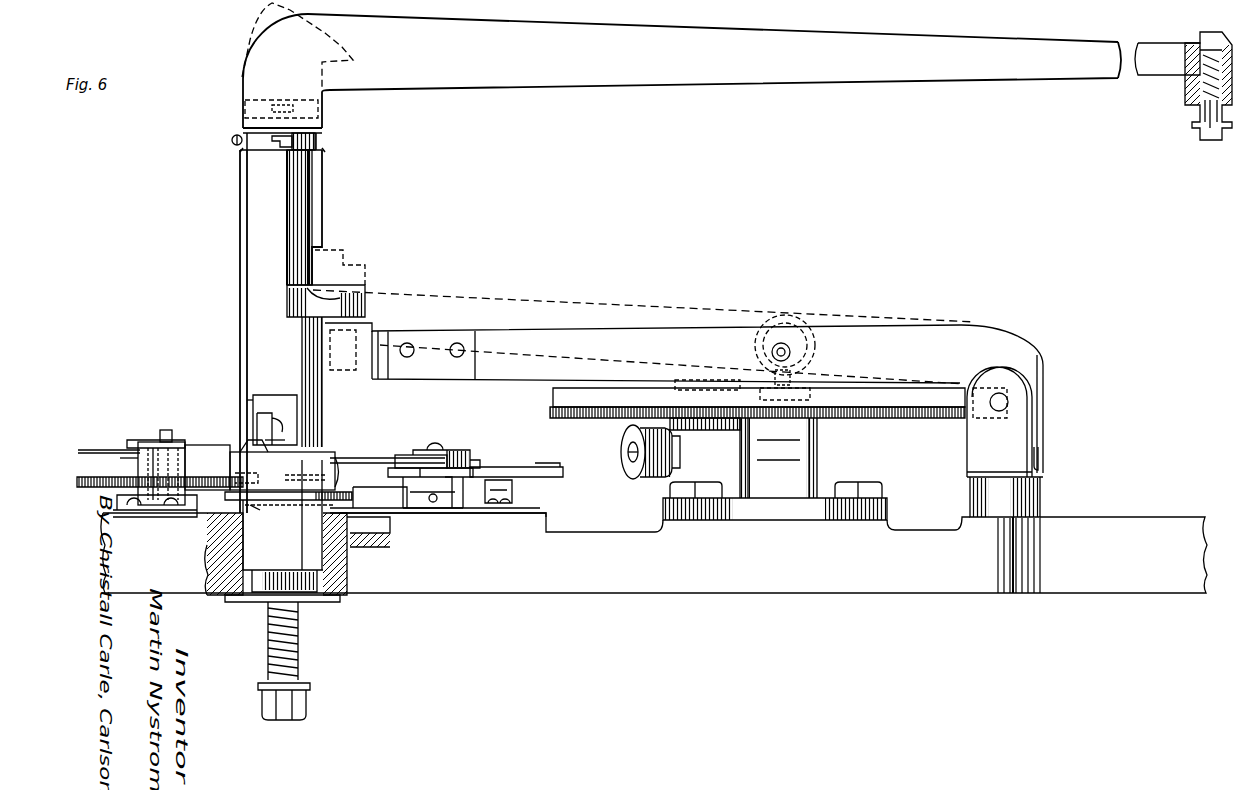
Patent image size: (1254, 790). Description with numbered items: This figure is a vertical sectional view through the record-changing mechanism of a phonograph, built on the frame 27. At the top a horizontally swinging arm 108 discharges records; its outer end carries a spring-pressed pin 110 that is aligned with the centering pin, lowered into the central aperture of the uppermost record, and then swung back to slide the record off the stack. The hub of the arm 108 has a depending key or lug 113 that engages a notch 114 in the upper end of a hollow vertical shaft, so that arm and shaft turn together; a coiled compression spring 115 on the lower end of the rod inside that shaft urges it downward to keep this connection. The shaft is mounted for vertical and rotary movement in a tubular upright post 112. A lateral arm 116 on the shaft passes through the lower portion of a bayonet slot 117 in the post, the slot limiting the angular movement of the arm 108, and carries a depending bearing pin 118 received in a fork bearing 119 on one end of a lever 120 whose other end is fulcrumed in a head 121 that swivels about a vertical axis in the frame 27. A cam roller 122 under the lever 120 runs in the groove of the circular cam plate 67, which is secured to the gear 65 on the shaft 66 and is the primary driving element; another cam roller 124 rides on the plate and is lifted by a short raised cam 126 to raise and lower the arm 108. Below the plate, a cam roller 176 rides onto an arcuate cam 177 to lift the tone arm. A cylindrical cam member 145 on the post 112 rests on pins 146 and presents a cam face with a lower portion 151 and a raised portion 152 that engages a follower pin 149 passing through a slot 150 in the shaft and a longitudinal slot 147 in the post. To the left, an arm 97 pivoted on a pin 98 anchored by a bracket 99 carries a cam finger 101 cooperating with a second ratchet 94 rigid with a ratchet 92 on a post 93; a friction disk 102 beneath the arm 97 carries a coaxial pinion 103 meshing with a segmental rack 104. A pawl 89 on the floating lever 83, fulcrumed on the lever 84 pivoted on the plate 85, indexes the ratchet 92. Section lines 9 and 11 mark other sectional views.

The horizontally swinging arm 108 is at (780, 72).
The spring-pressed pin 110 is at (1210, 140).
The depending key or lug 113 is at (290, 137).
The notch 114 is at (318, 146).
The tubular upright post 112 is at (240, 210).
The bayonet slot 117 is at (290, 225).
The section line 11- 11 is at (203, 268).
The lateral arm 116 is at (330, 300).
The depending bearing pin 118 is at (365, 315).
The fork bearing 119 is at (372, 326).
The lever 120 is at (575, 334).
The head 121 is at (1022, 440).
The gear 65 is at (955, 420).
The cam roller 124 is at (800, 330).
The short raised cam 126 is at (695, 385).
The cam roller 122 is at (830, 385).
The circular cam plate 67 is at (553, 397).
The shaft 66 is at (745, 462).
The arcuate cam 177 is at (710, 432).
The cam roller 176 is at (640, 478).
The frame 27 is at (1125, 517).
The coiled compression spring 115 is at (300, 655).
The segmental rack 104 is at (128, 456).
The friction disk 102 is at (110, 450).
The pin 98 is at (168, 430).
The bracket 99 is at (155, 448).
The arm 97 is at (140, 442).
The coaxial pinion 103 is at (205, 462).
The lower portion 151 is at (262, 462).
The cylindrical cam member 145 is at (240, 500).
The pins 146 is at (215, 535).
The slot 150 is at (262, 398).
The longitudinal slot 147 is at (258, 395).
The raised portion 152 is at (255, 440).
The follower pin 149 is at (268, 440).
The section line 9- 9 is at (212, 425).
The ratchet 92 is at (388, 472).
The cam finger 101 is at (408, 455).
The post 93 is at (435, 443).
The second ratchet 94 is at (482, 466).
The pawl 89 is at (520, 468).
The floating lever 83 is at (530, 480).
The lever 84 is at (515, 504).
The plate 85 is at (510, 517).